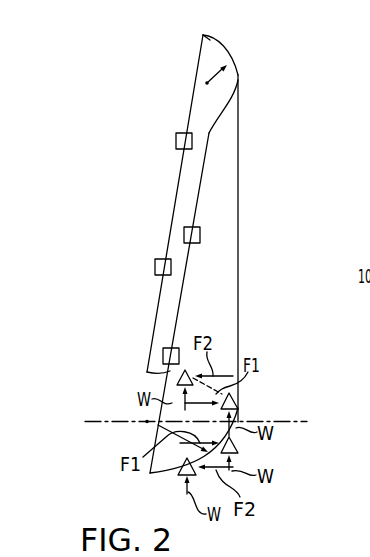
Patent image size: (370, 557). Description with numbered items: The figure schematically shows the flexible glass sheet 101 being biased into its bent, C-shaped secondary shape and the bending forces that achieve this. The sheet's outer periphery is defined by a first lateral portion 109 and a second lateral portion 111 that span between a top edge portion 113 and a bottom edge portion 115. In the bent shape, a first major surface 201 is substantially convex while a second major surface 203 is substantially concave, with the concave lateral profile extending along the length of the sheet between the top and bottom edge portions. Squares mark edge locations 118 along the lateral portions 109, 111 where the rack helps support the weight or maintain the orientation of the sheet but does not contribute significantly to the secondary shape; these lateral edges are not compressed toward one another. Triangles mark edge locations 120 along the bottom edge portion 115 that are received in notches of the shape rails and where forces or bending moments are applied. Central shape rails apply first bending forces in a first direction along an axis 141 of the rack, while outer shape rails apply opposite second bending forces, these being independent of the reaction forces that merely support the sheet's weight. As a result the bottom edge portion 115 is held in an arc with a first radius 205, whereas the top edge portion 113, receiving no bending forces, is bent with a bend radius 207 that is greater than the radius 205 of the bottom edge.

The flexible glass sheet 101 is at (174, 269).
The second major surface 203 is at (206, 57).
The top edge portion 113 is at (228, 54).
The bend radius 207 is at (207, 83).
The second lateral portion 111 is at (198, 188).
The first lateral portion 109 is at (172, 207).
The edge locations 118 is at (154, 266).
The first major surface 201 is at (222, 260).
The bottom edge portion 115 is at (147, 373).
The axis 141 is at (296, 421).
The first radius 205 is at (147, 422).
The edge locations 120 is at (181, 477).